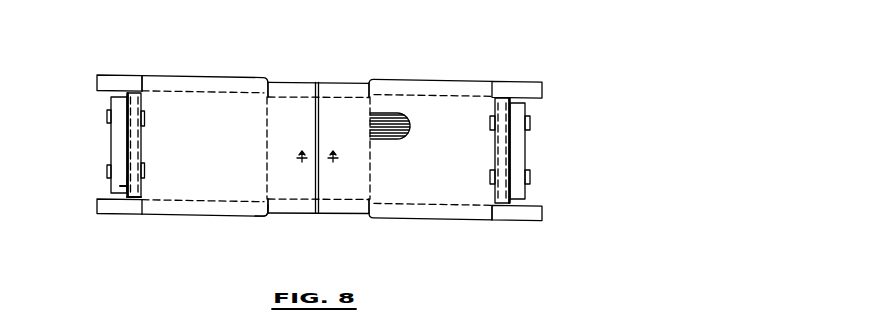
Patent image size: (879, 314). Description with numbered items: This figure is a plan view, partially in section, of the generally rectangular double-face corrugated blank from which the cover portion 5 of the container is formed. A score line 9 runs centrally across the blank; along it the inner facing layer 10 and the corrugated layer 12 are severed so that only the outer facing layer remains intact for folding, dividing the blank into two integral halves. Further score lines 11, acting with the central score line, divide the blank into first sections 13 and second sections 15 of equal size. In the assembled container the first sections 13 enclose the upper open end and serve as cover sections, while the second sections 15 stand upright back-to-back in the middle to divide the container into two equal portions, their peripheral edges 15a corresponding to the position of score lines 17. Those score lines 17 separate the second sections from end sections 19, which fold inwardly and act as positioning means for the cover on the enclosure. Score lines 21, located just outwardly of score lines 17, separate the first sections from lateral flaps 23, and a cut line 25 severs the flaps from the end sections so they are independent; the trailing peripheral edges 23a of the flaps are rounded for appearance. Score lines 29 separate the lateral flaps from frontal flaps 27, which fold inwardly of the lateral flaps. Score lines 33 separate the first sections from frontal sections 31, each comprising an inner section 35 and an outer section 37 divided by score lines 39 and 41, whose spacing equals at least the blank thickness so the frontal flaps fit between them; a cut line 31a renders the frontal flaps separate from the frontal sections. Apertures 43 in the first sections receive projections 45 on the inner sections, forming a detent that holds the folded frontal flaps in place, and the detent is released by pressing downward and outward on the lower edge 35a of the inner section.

The cover portion 5 is at (313, 48).
The score line 9 is at (318, 138).
The inner facing layer 10 is at (317, 149).
The score lines 11 is at (267, 157).
The corrugated layer 12 is at (411, 132).
The first sections 13 is at (313, 148).
The second sections 15 is at (322, 148).
The peripheral edges 15a is at (310, 199).
The score lines 17 is at (333, 97).
The end sections 19 is at (305, 88).
The score lines 21 is at (227, 92).
The lateral flaps 23 is at (198, 83).
The trailing peripheral edges 23a is at (267, 215).
The line 25 is at (270, 83).
The frontal flaps 27 is at (108, 83).
The score lines 29 is at (143, 90).
The frontal sections 31 is at (107, 158).
The line 31a is at (142, 197).
The score lines 33 is at (140, 147).
The inner section 35 is at (118, 137).
The lower edge 35a is at (127, 185).
The outer section 37 is at (132, 152).
The score lines 39 is at (145, 168).
The score lines 41 is at (123, 184).
The apertures 43 is at (145, 118).
The projections 45 is at (109, 118).